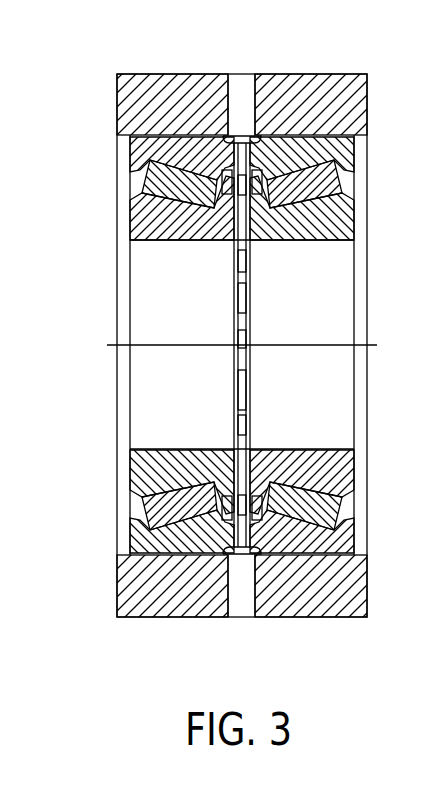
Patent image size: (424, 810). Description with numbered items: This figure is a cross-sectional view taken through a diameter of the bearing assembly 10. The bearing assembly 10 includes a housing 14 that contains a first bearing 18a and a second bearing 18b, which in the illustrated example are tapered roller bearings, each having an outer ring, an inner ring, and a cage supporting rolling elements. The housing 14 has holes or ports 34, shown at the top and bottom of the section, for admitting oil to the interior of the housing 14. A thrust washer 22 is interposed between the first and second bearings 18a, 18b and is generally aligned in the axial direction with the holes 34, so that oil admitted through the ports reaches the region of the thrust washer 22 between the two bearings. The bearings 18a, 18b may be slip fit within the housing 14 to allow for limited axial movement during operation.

The bearing assembly 10 is at (80, 139).
The housing 14 is at (165, 86).
The holes or ports 34 is at (241, 88).
The thrust washer 22 is at (242, 301).
The first bearing 18a is at (130, 467).
The second bearing 18b is at (352, 483).